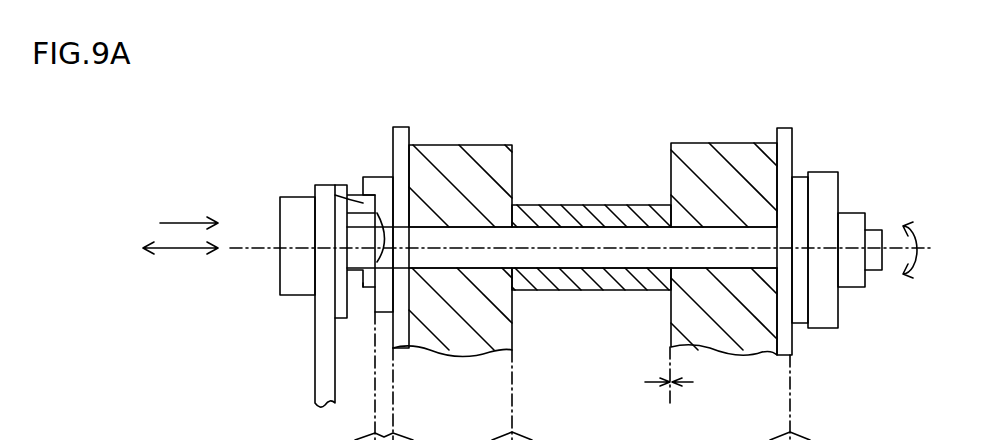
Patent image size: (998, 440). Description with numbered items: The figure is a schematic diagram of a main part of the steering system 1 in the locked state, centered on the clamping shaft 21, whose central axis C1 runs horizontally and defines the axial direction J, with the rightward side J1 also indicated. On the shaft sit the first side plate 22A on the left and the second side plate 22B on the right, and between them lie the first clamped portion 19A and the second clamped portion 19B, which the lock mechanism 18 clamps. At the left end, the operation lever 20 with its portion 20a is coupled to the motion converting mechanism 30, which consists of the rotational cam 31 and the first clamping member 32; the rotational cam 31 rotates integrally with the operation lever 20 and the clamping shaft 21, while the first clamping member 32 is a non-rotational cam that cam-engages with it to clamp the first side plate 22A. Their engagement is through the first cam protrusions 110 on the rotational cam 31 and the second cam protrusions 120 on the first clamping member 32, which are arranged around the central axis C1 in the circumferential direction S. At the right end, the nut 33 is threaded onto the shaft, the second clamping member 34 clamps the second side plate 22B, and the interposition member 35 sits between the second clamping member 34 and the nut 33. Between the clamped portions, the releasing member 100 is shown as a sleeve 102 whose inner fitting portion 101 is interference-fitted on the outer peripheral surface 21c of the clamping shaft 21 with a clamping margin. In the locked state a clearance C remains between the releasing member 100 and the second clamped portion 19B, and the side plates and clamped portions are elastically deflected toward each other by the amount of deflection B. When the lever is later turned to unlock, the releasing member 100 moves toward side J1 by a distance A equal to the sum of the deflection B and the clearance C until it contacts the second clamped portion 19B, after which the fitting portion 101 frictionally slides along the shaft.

The steering system 1 is at (871, 150).
The lock mechanism 18 is at (274, 313).
The first clamped portion 19A is at (422, 335).
The second clamped portion 19B is at (713, 338).
The operation lever 20 is at (313, 383).
The hub portion 20a is at (285, 280).
The clamping shaft 21 is at (878, 221).
The outer peripheral surface 21c is at (560, 290).
The first side plate 22A is at (402, 133).
The second side plate 22B is at (787, 133).
The motion converting mechanism 30 is at (387, 131).
The rotational cam 31 is at (343, 187).
The first clamping member 32 is at (375, 178).
The nut 33 is at (858, 288).
The second clamping member 34 is at (798, 177).
The interposition member 35 is at (825, 329).
The releasing member 100 is at (571, 195).
The fitting portion 101 is at (590, 227).
The sleeve 102 is at (632, 205).
The first cam protrusions 110 is at (360, 203).
The second cam protrusions 120 is at (363, 283).
The circumferential direction S is at (927, 233).
The side J1 in the axial direction J1 is at (170, 222).
The axial direction J is at (182, 250).
The central axis C1 is at (243, 247).
The distance A is at (513, 430).
The amount of deflection B is at (792, 432).
The clearance C is at (669, 405).